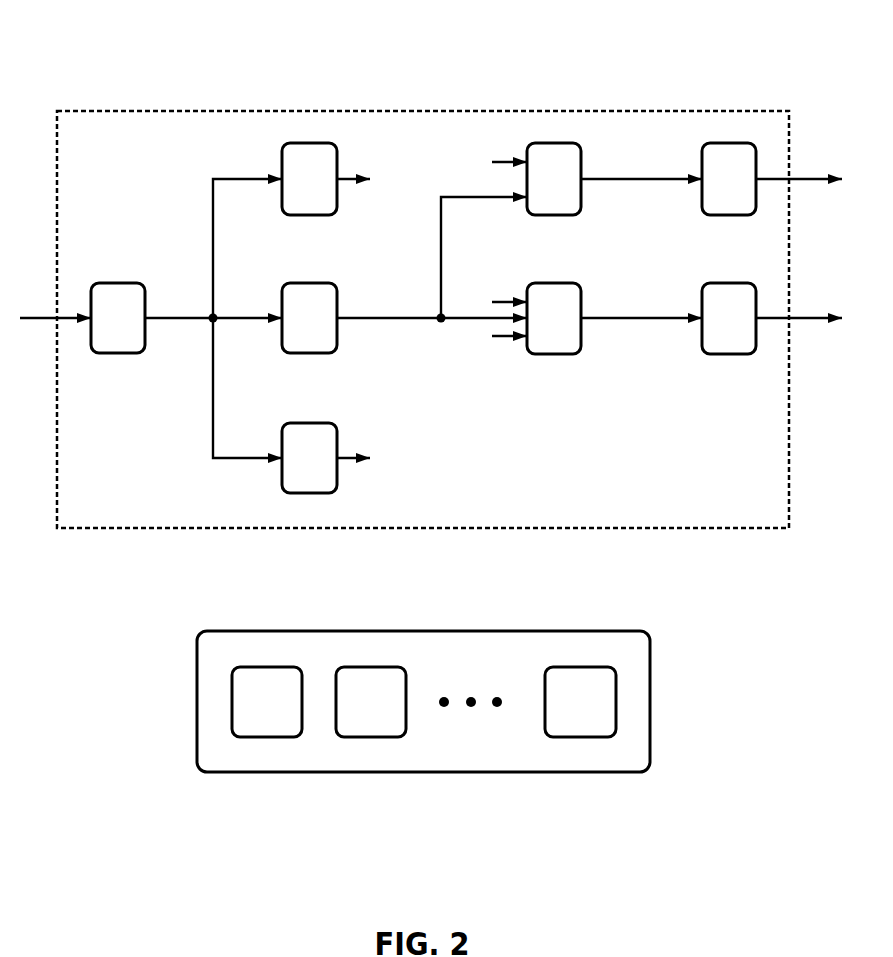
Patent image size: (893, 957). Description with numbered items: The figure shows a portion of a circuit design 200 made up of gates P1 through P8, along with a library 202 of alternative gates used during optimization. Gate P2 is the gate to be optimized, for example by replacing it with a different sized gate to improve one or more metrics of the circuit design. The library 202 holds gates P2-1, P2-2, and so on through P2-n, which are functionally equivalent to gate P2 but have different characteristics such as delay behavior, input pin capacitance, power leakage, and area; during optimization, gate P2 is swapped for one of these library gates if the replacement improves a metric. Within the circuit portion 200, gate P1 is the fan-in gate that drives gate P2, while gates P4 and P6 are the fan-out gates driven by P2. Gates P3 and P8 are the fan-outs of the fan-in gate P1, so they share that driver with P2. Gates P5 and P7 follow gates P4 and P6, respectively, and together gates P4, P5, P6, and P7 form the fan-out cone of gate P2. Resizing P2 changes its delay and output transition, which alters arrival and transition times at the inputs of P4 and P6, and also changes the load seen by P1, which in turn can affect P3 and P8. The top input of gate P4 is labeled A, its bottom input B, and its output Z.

The portion of a circuit design 200 is at (431, 284).
The library 202 is at (423, 736).
The gate P1 is at (118, 318).
The gate P2 is at (309, 318).
The gate P3 is at (309, 179).
The gate P4 is at (554, 179).
The gate P5 is at (729, 179).
The gate P6 is at (554, 318).
The gate P7 is at (729, 318).
The gate P8 is at (309, 458).
The gate P2-1 is at (267, 702).
The gate P2-2 is at (371, 702).
The gate P2-n is at (580, 702).